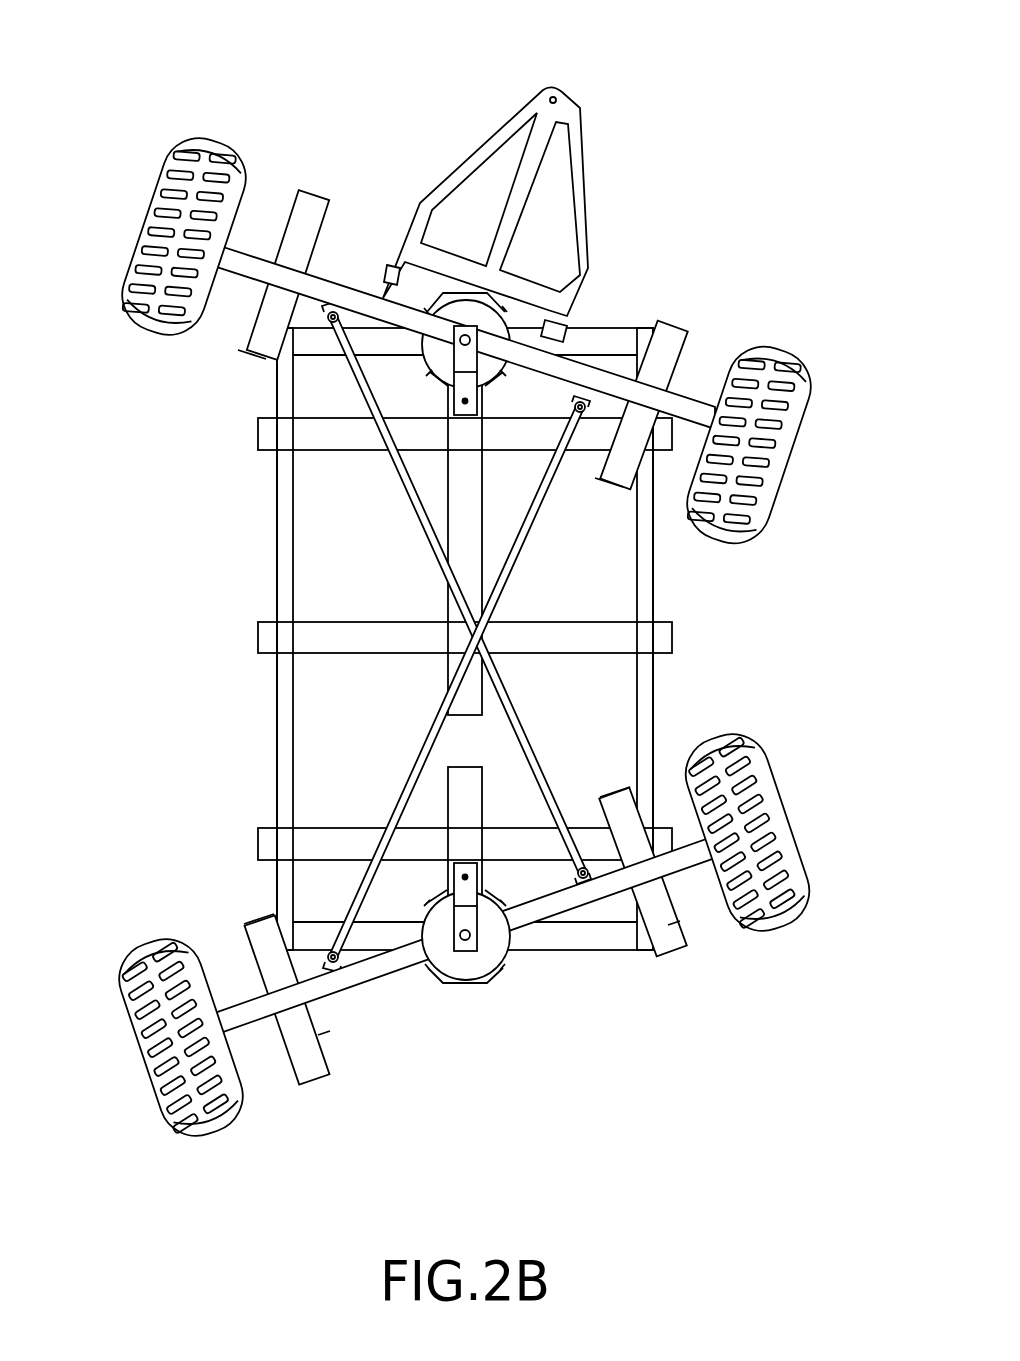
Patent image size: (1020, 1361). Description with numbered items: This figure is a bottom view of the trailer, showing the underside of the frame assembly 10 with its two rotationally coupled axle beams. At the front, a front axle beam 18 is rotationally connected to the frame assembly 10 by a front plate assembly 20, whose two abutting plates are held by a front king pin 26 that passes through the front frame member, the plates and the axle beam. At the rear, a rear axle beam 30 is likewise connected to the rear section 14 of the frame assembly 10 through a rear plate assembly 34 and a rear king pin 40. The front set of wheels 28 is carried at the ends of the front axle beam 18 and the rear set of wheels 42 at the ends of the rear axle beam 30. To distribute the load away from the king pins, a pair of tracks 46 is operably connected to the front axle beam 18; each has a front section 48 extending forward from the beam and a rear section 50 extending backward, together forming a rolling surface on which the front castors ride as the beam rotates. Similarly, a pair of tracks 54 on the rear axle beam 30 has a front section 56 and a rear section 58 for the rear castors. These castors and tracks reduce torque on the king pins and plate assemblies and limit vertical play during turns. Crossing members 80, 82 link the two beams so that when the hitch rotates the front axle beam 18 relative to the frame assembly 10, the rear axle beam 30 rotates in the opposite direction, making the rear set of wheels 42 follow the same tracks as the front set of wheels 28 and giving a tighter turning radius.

The frame assembly 10 is at (486, 617).
The rear section of the frame 14 is at (577, 966).
The front axle beam 18 is at (335, 290).
The front plate assembly 20 is at (414, 361).
The front king pin 26 is at (460, 345).
The front set of wheels 28 is at (205, 140).
The rear axle beam 30 is at (372, 982).
The rear plate assembly 34 is at (506, 1000).
The rear king pin 40 is at (463, 942).
The rear set of wheels 42 is at (147, 1070).
The tracks 46 is at (323, 189).
The front section of track 48 is at (341, 282).
The rear section of track 50 is at (252, 357).
The tracks 54 is at (294, 1092).
The front section of track 56 is at (248, 922).
The rear section of track 58 is at (327, 1060).
The member 80 is at (410, 508).
The member 82 is at (418, 752).